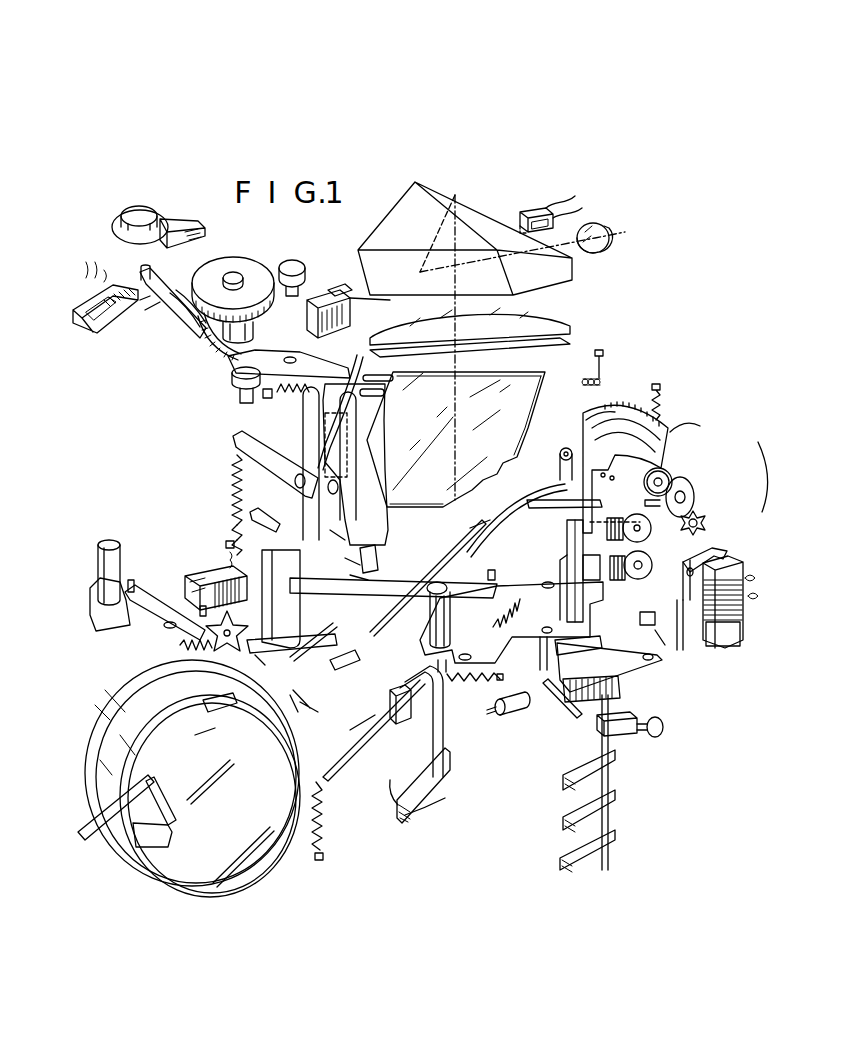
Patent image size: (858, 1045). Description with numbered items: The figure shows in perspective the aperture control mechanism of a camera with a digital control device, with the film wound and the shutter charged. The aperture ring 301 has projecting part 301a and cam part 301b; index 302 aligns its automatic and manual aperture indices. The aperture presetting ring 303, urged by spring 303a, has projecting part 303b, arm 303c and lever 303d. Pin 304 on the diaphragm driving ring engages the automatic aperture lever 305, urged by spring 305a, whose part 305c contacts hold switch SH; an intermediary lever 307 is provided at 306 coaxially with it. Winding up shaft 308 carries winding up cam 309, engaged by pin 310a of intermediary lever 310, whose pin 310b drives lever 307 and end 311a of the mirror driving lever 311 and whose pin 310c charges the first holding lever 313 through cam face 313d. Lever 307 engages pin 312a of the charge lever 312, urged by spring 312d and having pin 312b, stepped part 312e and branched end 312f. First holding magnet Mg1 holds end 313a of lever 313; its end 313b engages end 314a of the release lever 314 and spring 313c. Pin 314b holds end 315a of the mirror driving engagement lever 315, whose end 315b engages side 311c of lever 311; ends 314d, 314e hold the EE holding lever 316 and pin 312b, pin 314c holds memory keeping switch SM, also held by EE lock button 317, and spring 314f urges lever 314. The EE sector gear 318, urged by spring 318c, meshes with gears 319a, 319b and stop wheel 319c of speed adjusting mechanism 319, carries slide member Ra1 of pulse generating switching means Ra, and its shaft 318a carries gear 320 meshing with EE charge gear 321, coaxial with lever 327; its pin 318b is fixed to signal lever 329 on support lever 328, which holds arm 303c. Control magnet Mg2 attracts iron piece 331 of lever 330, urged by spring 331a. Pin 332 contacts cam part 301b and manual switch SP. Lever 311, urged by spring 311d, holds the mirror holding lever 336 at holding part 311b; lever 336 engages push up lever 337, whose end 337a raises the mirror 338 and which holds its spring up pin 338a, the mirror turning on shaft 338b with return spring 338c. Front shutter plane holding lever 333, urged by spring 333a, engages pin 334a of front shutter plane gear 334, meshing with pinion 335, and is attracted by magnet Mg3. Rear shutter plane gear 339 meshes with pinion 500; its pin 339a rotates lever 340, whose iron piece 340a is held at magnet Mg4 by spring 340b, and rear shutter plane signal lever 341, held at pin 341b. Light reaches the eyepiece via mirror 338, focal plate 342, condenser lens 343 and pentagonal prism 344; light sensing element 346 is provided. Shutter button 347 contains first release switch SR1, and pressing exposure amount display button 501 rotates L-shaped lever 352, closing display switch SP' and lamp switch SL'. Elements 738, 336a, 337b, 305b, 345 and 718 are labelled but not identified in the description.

The shutter button 347 is at (137, 212).
The first release switch SR1 is at (192, 224).
The iron piece 340a is at (138, 275).
The shutter control magnet Mg4 is at (104, 326).
The spring 340b is at (152, 318).
The lever to be attracted 340 is at (197, 333).
The front shutter plane gear 334 is at (246, 268).
The pin 334a is at (236, 282).
The front shutter plane pinion 335 is at (305, 268).
The spring 333a is at (337, 296).
The shutter controlling magnet Mg3 is at (405, 308).
The front shutter plane holding lever 333 is at (314, 322).
The holding pin 341b is at (354, 357).
The rear shutter plane gear 339 is at (228, 362).
The pin 339a is at (228, 360).
The rear shutter plane pinion 500 is at (244, 390).
The rear shutter plane signal lever 341 is at (235, 378).
The holding part 311b is at (317, 418).
The mirror driving lever 311 is at (266, 462).
The spring 311d is at (236, 490).
The end of push up lever 337a is at (260, 510).
The end of mirror driving lever 311a is at (237, 512).
The end of first holding lever 313a is at (237, 530).
The pin 738 is at (226, 545).
The mirror 338 is at (583, 430).
The spring up pin 338a is at (393, 390).
The arm portion 336a is at (355, 425).
The mirror holding lever 336 is at (352, 447).
The push up lever 337 is at (350, 494).
The side of mirror driving lever 311c is at (338, 535).
The end of mirror driving engagement lever 315b is at (368, 548).
The plate portion 337b is at (352, 560).
The rising up part 305c is at (360, 578).
The intermediary lever 307 is at (440, 587).
The arm 303c is at (470, 523).
The pin 310b is at (318, 590).
The intermediary lever pivot 306 is at (450, 623).
The charge lever 312 is at (479, 584).
The pin 312a is at (495, 574).
The spring 312d is at (518, 606).
The signal lever 329 is at (548, 490).
The support lever 328 is at (560, 455).
The pin 318b is at (533, 512).
The EE sector gear 318 is at (572, 513).
The EE holding lever 316 is at (567, 553).
The shaft 318a is at (596, 572).
The pentagonal prism 344 is at (573, 268).
The light sensing element 346 is at (528, 210).
The eyepiece lens 345 is at (603, 228).
The condenser lens 343 is at (570, 326).
The focal plate 342 is at (570, 343).
The return spring 338c is at (599, 360).
The mirror shaft 338b is at (583, 382).
The slide member Ra1 is at (583, 415).
The pulse generating switching means Ra is at (632, 400).
The spring 318c is at (662, 405).
The gear 319a is at (672, 480).
The gear 319b is at (693, 492).
The stop wheel 319c is at (703, 518).
The speed adjusting mechanism 319 is at (774, 477).
The gear 320 is at (651, 529).
The EE charge gear 321 is at (652, 566).
The spring 331a is at (683, 576).
The lever to be attracted 330 is at (722, 552).
The iron piece 331 is at (740, 570).
The coil 718 is at (748, 602).
The control magnet Mg2 is at (740, 635).
The stepped part 312e is at (645, 621).
The lever 327 is at (658, 640).
The branched end 312f is at (681, 645).
The pin 312b is at (661, 662).
The memory keeping switch SM is at (625, 690).
The end of release lever 314e is at (590, 652).
The end of release lever 314d is at (540, 655).
The pin 314c is at (503, 678).
The spring 314f is at (431, 658).
The spring 305a is at (468, 682).
The rod 305b is at (445, 720).
The automatic aperture lever 305 is at (410, 710).
The pin 304 is at (356, 752).
The manual switch SP is at (371, 733).
The release lever 314 is at (400, 670).
The pin 314b is at (350, 665).
The end of release lever 314a is at (268, 645).
The end of first holding lever 313b is at (262, 660).
The end of mirror driving engagement lever 315a is at (318, 705).
The mirror driving engagement lever 315 is at (283, 612).
The first holding lever 313 is at (232, 650).
The pin 310c is at (214, 700).
The spring 313c is at (185, 648).
The aperture presetting ring 303 is at (152, 692).
The aperture ring 301 is at (292, 868).
The projecting part 301a is at (258, 778).
The pin 332 is at (218, 782).
The index 302 is at (180, 730).
The projecting part 303b is at (205, 740).
The lever 303d is at (98, 833).
The cam part 301b is at (153, 848).
The spring 303a is at (325, 820).
The hold switch SH is at (425, 812).
The EE lock button 317 is at (520, 715).
The L-shaped lever 352 is at (545, 700).
The exposure amount display button 501 is at (665, 727).
The display switch SP' is at (572, 781).
The lamp switch SL' is at (605, 843).
The winding up shaft 308 is at (116, 546).
The winding up cam 309 is at (95, 625).
The intermediary lever 310 is at (157, 617).
The pin 310a is at (134, 587).
The cam face 313d is at (198, 610).
The first holding magnet Mg1 is at (205, 575).